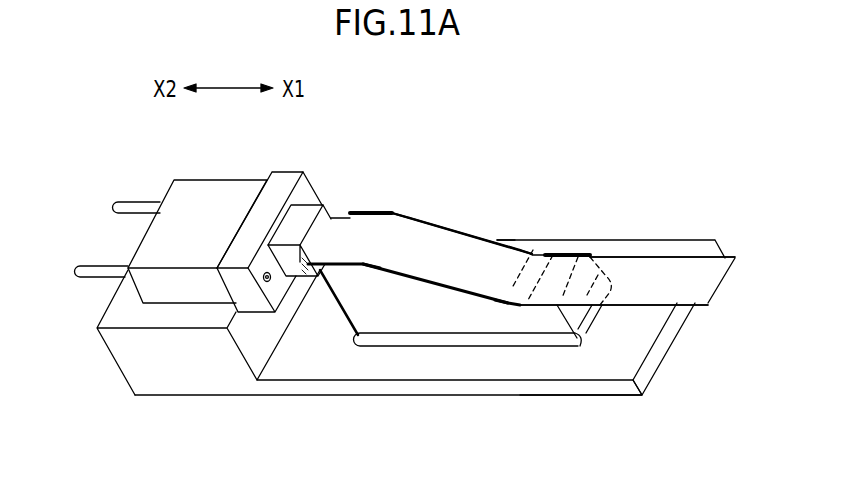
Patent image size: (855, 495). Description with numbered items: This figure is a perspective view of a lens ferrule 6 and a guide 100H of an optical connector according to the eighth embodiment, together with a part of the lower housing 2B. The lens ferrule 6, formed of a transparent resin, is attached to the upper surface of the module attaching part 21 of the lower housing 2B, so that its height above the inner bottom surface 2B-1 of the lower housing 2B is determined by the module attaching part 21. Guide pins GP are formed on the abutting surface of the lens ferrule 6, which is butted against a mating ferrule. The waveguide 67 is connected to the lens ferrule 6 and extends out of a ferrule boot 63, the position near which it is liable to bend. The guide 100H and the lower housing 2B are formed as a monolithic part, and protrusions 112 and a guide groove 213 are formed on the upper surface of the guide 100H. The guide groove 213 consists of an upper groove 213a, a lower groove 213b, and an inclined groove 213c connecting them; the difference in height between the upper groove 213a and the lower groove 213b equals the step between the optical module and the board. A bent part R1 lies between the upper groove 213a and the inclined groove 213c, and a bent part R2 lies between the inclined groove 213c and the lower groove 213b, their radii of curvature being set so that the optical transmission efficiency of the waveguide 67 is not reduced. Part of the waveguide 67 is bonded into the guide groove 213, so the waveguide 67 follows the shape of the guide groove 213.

The lower housing 2B is at (527, 410).
The inner bottom surface 2B-1 is at (637, 358).
The module attaching part 21 is at (160, 318).
The lens ferrule 6 is at (219, 184).
The guide pins GP is at (122, 275).
The ferrule boot 63 is at (297, 215).
The guide groove 213 is at (521, 216).
The upper groove 213a is at (360, 237).
The lower groove 213b is at (572, 250).
The inclined groove 213c is at (510, 237).
The bent part R1 is at (385, 238).
The bent part R2 is at (517, 282).
The guide 100H is at (498, 226).
The protrusions 112 is at (437, 224).
The waveguide 67 is at (677, 272).